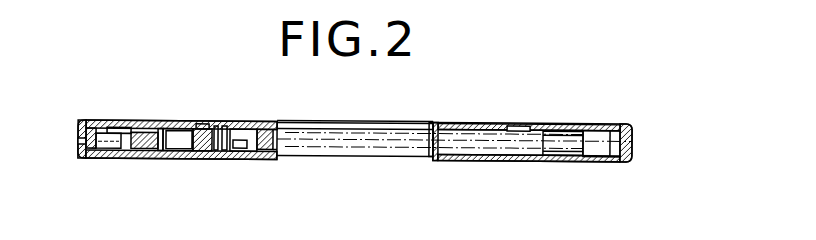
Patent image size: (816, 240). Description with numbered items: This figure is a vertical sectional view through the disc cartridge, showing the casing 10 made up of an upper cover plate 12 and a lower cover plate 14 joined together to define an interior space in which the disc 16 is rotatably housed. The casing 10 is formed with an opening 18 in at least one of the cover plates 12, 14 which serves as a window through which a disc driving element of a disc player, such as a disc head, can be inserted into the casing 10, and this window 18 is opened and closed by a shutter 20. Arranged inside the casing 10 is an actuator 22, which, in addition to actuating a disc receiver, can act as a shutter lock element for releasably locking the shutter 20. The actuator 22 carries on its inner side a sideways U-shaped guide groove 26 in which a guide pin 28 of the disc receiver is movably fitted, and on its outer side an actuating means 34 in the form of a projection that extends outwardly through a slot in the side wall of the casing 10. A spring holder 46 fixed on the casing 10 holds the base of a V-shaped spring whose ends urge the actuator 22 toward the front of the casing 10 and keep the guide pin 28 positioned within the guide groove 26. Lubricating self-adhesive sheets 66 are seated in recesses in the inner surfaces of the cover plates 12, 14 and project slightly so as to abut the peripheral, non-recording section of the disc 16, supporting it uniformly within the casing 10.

The casing 10 is at (643, 108).
The upper cover plate 12 is at (186, 120).
The lower cover plate 14 is at (183, 156).
The disc 16 is at (387, 146).
The opening 18 is at (365, 122).
The shutter 20 is at (423, 119).
The actuator 22 is at (142, 152).
The guide groove 26 is at (117, 131).
The guide pin 28 is at (134, 131).
The actuating means 34 is at (78, 141).
The spring holder 46 is at (224, 124).
The lubricating self-adhesive sheet 66 is at (520, 118).